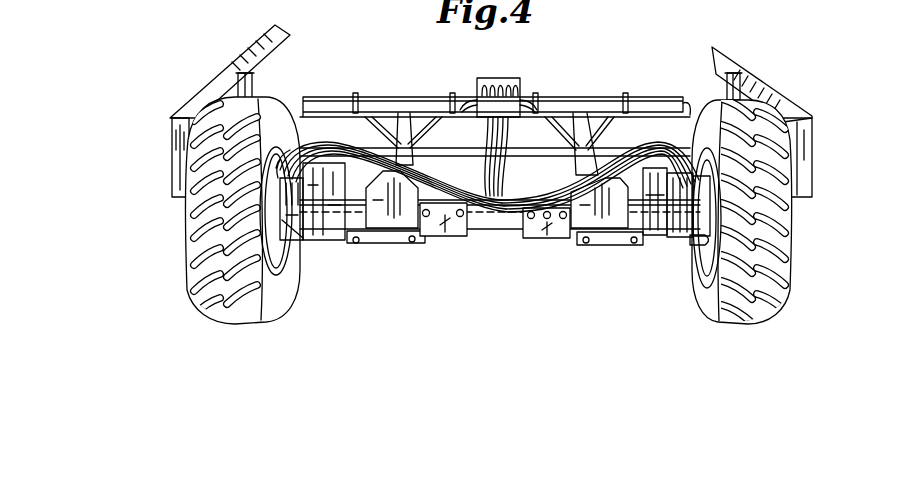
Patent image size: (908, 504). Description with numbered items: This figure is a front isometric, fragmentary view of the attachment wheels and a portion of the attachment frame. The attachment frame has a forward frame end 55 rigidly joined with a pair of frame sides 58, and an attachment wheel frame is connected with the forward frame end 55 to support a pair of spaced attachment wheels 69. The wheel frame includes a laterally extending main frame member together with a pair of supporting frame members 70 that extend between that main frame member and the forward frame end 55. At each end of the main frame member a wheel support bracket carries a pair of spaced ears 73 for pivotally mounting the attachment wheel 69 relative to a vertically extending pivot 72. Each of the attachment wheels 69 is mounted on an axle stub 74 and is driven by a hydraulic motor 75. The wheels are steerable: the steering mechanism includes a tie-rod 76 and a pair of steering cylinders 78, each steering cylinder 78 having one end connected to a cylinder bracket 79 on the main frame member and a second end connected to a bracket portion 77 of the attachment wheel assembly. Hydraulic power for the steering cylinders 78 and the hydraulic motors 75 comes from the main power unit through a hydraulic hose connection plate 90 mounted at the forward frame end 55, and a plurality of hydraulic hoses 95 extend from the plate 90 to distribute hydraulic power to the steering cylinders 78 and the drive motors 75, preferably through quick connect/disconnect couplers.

The forward frame end 55 is at (370, 133).
The frame sides 58 is at (256, 52).
The attachment wheels 69 is at (196, 224).
The supporting frame members 70 is at (400, 147).
The vertically extending pivot 72 is at (722, 168).
The spaced ears 73 is at (345, 160).
The axle stub 74 is at (698, 242).
The hydraulic motor 75 is at (297, 201).
The tie-rod 76 is at (487, 233).
The bracket portion 77 is at (733, 228).
The steering cylinders 78 is at (375, 243).
The cylinder bracket 79 is at (448, 226).
The hydraulic hose connection plate 90 is at (506, 84).
The hydraulic hoses 95 is at (320, 140).